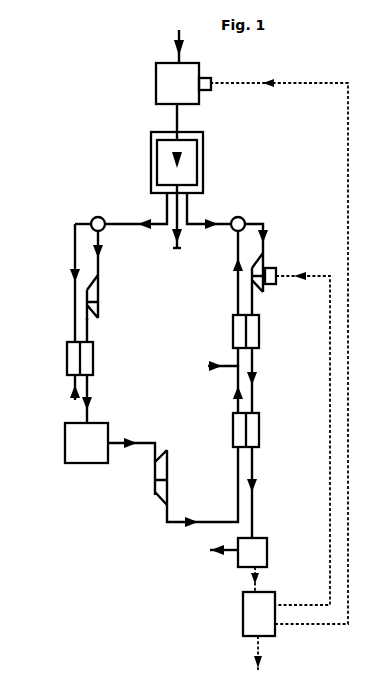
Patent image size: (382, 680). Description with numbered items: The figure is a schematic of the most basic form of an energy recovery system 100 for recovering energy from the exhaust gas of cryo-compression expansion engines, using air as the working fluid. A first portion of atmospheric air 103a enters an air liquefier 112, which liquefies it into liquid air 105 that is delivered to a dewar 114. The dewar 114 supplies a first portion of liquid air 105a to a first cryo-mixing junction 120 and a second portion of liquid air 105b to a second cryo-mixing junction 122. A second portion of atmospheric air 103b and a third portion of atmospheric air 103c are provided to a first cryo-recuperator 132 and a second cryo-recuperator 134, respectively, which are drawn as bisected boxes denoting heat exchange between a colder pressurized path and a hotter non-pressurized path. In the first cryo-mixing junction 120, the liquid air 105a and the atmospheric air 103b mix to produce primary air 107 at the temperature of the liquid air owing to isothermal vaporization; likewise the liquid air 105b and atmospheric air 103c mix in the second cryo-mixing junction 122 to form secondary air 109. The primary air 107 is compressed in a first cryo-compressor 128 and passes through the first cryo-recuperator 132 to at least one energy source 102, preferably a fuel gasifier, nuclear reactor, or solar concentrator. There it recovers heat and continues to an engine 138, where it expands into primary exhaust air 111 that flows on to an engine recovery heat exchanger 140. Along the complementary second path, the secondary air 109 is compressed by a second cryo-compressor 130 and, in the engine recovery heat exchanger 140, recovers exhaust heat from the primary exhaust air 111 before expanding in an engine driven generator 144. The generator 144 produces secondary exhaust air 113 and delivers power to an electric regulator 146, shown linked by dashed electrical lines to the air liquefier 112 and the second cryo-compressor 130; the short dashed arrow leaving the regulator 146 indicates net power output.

The energy recovery system 100 is at (112, 48).
The energy source 102 is at (83, 447).
The first portion of atmospheric air 103a is at (176, 42).
The second portion of atmospheric air 103b is at (68, 272).
The third portion of atmospheric air 103c is at (233, 262).
The liquid air 105 is at (172, 158).
The first portion of liquid air 105a is at (138, 220).
The second portion of liquid air 105b is at (213, 228).
The primary air 107 is at (97, 257).
The secondary air 109 is at (266, 237).
The primary exhaust air 111 is at (236, 397).
The air liquefier 112 is at (165, 80).
The secondary exhaust air 113 is at (210, 553).
The dewar 114 is at (197, 160).
The first cryo-mixing junction 120 is at (90, 220).
The second cryo-mixing junction 122 is at (244, 218).
The first cryo-compressor 128 is at (97, 308).
The second cryo-compressor 130 is at (258, 263).
The first cryo-recuperator 132 is at (70, 347).
The second cryo-recuperator 134 is at (240, 328).
The engine 138 is at (160, 465).
The engine recovery heat exchanger 140 is at (247, 430).
The engine driven generator 144 is at (258, 550).
The electric regulator 146 is at (250, 607).